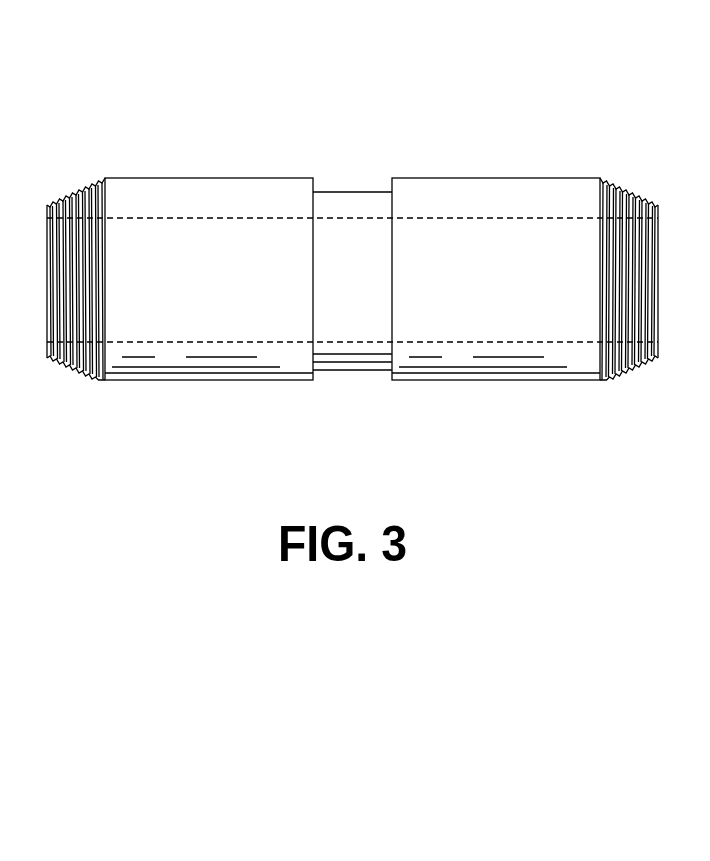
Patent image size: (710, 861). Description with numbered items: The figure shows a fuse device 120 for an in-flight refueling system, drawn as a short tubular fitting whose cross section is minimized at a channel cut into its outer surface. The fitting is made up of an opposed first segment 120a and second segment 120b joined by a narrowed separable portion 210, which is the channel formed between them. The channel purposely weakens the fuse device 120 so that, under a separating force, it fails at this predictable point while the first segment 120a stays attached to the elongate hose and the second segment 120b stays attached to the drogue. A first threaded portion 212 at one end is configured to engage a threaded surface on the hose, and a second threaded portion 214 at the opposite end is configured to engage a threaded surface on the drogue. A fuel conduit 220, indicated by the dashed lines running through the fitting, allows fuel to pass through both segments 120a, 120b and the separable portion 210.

The fuse device 120 is at (279, 141).
The first segment 120a is at (330, 393).
The second segment 120b is at (658, 393).
The separable portion 210 is at (347, 381).
The first threaded portion 212 is at (70, 190).
The second threaded portion 214 is at (627, 190).
The fuel conduit 220 is at (452, 237).